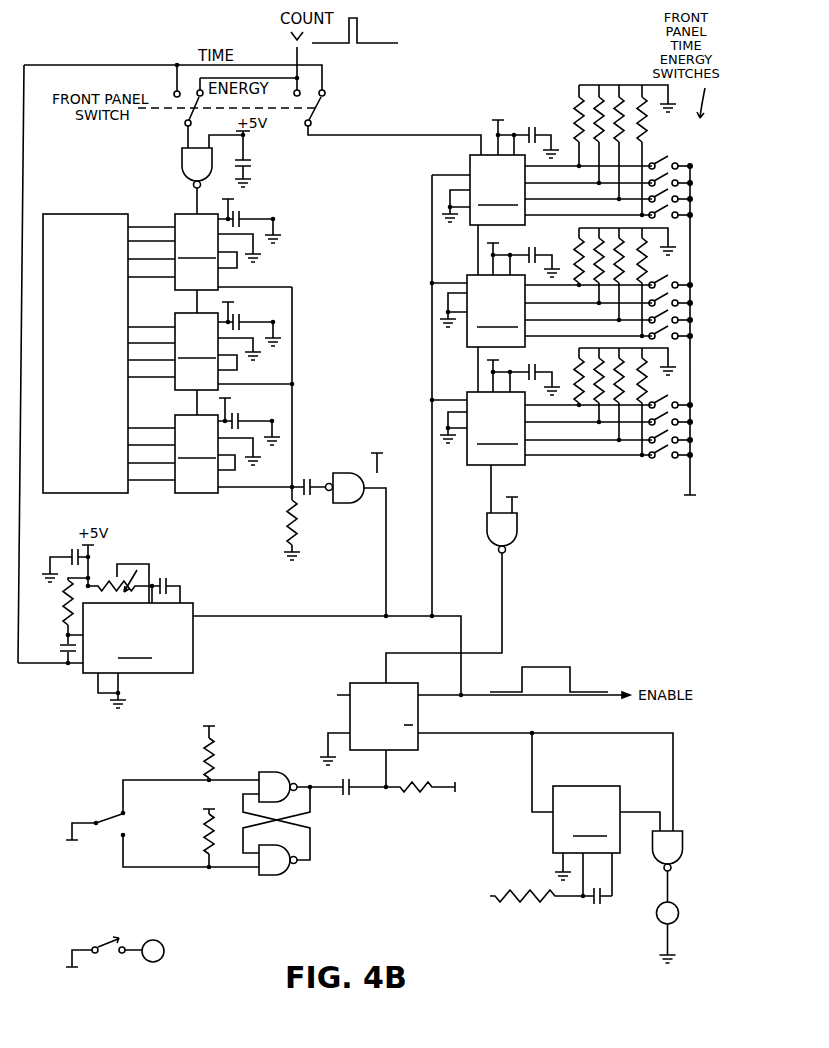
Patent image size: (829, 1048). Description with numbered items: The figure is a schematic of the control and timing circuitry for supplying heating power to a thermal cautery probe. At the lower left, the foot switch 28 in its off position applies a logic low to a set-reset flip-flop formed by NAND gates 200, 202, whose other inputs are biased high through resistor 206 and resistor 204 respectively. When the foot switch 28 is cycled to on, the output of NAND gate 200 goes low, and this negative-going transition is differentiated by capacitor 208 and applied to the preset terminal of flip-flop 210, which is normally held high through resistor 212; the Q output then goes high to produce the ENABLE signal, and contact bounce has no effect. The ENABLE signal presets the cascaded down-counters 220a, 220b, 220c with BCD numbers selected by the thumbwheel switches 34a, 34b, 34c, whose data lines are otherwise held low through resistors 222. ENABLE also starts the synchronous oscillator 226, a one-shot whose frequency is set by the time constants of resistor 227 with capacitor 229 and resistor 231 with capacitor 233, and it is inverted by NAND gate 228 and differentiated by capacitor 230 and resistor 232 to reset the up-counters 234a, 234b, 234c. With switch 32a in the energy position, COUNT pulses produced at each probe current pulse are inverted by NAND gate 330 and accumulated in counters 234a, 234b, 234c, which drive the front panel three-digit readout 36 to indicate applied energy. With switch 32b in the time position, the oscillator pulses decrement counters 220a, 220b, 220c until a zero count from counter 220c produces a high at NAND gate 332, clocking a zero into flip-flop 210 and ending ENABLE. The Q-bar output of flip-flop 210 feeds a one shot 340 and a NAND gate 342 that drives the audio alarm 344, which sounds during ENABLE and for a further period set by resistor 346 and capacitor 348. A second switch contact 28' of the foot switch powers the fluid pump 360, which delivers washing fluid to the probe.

The switch 32a is at (182, 115).
The switch 32b is at (326, 108).
The NAND gate 330 is at (182, 163).
The front panel three-digit readout 36 is at (90, 213).
The counter 234a is at (210, 240).
The counter 234b is at (210, 342).
The counter 234c is at (210, 441).
The capacitor 230 is at (315, 477).
The NAND gate 228 is at (352, 504).
The resistor 232 is at (283, 520).
The resistor 227 is at (143, 563).
The capacitor 229 is at (172, 580).
The resistor 231 is at (62, 602).
The capacitor 233 is at (60, 644).
The synchronous oscillator 226 is at (138, 655).
The flip-flop 210 is at (357, 683).
The resistor 206 is at (202, 744).
The NAND gate 200 is at (277, 772).
The resistor 204 is at (204, 842).
The NAND gate 202 is at (280, 877).
The capacitor 208 is at (355, 796).
The resistor 212 is at (418, 796).
The foot switch 28 is at (151, 827).
The second switch contact 28' is at (101, 955).
The fluid pump 360 is at (164, 946).
The resistors 222 is at (552, 95).
The counter 220a is at (542, 163).
The counter 220b is at (541, 286).
The counter 220c is at (541, 427).
The thumbwheel switch 34a is at (667, 158).
The thumbwheel switch 34b is at (663, 284).
The thumbwheel switch 34c is at (658, 467).
The NAND gate 332 is at (518, 534).
The one shot 340 is at (606, 841).
The NAND gate 342 is at (652, 866).
The audio alarm 344 is at (656, 923).
The resistor 346 is at (533, 912).
The capacitor 348 is at (597, 912).